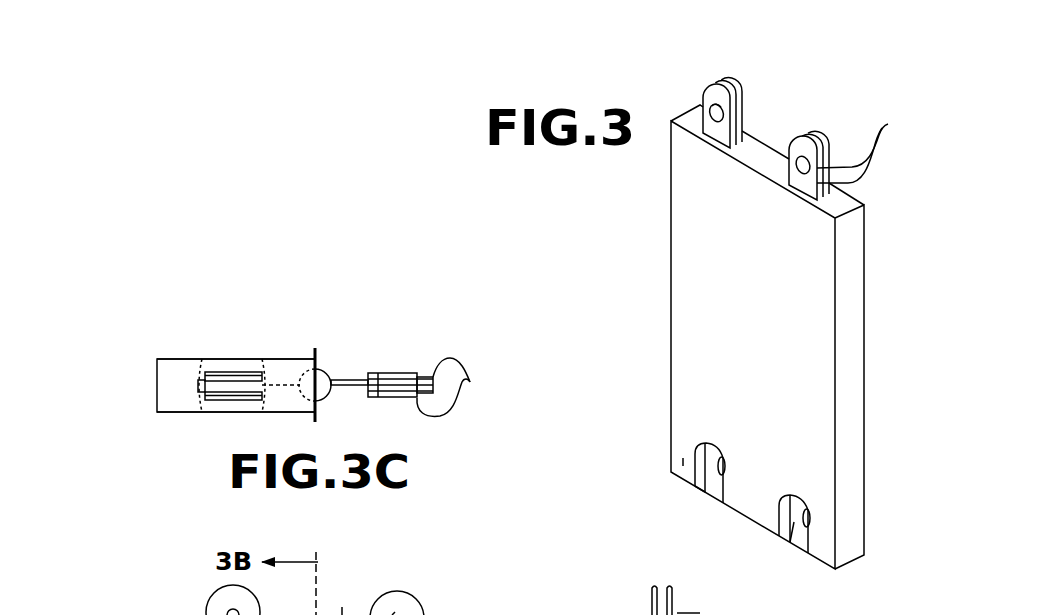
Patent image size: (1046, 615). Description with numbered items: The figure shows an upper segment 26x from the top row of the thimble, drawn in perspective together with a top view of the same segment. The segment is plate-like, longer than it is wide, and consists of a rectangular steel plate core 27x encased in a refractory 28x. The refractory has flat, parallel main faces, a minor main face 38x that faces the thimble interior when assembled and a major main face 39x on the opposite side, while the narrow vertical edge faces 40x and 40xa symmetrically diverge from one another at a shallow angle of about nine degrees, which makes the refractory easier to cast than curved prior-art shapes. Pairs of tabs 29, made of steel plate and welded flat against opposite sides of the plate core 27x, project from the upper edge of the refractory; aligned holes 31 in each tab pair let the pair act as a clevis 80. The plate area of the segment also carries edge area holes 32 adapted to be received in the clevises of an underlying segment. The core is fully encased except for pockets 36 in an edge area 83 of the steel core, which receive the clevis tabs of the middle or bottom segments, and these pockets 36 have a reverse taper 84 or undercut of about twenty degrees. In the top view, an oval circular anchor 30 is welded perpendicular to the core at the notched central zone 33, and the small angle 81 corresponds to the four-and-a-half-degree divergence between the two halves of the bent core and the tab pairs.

In FIG. 3, the upper segment 26x is at (734, 300).
In FIG. 3, the minor main face 38x is at (797, 388).
In FIG. 3C, the minor main face 38x is at (180, 414).
In FIG. 3, the edge face 40x is at (850, 339).
In FIG. 3, the edge face 40xa is at (676, 107).
In FIG. 3C, the edge face 40xa is at (181, 378).
In FIG. 3, the clevis 80 is at (802, 127).
In FIG. 3, the tab 29 is at (874, 142).
In FIG. 3C, the tab 29 is at (147, 597).
In FIG. 3, the pocket 36 is at (693, 483).
In FIG. 3, the edge area 83 is at (708, 495).
In FIG. 3, the reverse taper 84 is at (683, 458).
In FIG. 3, the edge area hole 32 is at (794, 522).
In FIG. 3C, the refractory 28x is at (180, 383).
In FIG. 3C, the major main face 39x is at (185, 358).
In FIG. 3C, the anchor 30 is at (322, 364).
In FIG. 3C, the angle 81 is at (334, 402).
In FIG. 3C, the steel plate core 27x is at (368, 374).
In FIG. 3C, the notched central zone 33 is at (341, 583).
In FIG. 3C, the hole 31 is at (392, 614).